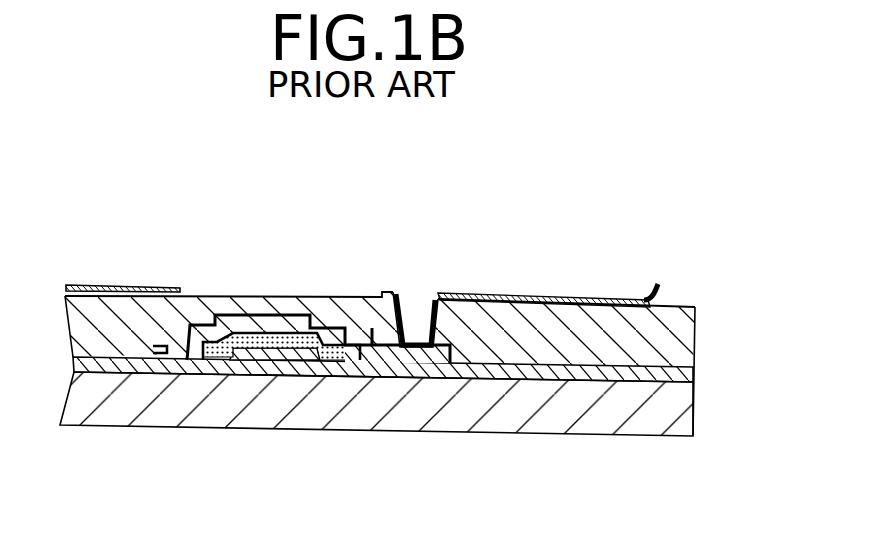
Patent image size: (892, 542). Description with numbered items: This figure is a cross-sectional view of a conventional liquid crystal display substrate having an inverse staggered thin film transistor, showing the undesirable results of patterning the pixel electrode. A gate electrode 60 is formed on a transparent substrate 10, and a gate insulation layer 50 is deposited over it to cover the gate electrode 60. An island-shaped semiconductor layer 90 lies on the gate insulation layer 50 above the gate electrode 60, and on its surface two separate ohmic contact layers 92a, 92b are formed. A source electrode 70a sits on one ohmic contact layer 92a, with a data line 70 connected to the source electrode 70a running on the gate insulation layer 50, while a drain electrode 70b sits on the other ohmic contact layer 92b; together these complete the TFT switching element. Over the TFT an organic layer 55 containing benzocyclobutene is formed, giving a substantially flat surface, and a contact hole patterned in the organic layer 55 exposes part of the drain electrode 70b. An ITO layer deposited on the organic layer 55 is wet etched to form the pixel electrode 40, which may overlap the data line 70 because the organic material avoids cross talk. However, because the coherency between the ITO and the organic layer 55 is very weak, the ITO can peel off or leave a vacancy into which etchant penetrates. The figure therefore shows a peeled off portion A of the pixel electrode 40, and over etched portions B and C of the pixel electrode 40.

The transparent substrate 10 is at (648, 422).
The gate insulation layer 50 is at (527, 373).
The gate electrode 60 is at (278, 363).
The data line 70 is at (155, 345).
The source electrode 70a is at (232, 296).
The drain electrode 70b is at (338, 297).
The ohmic contact layer 92a is at (271, 301).
The ohmic contact layer 92b is at (354, 350).
The semiconductor layer 90 is at (362, 347).
The pixel electrode 40 is at (608, 298).
The organic layer 55 is at (554, 318).
The peeled off portion of the pixel electrode A is at (692, 295).
The over etched portion of the pixel electrode B is at (400, 283).
The over etched portion of the pixel electrode C is at (160, 276).